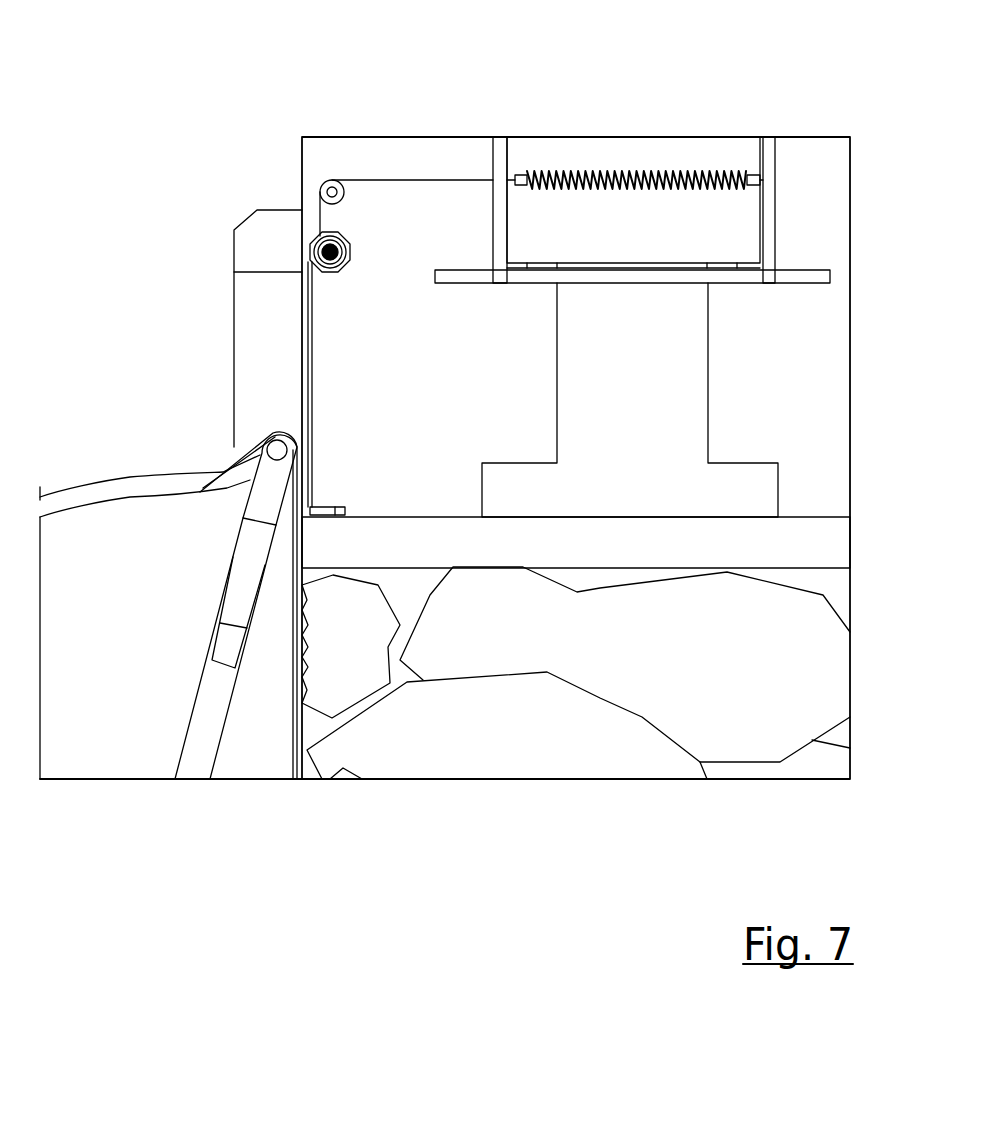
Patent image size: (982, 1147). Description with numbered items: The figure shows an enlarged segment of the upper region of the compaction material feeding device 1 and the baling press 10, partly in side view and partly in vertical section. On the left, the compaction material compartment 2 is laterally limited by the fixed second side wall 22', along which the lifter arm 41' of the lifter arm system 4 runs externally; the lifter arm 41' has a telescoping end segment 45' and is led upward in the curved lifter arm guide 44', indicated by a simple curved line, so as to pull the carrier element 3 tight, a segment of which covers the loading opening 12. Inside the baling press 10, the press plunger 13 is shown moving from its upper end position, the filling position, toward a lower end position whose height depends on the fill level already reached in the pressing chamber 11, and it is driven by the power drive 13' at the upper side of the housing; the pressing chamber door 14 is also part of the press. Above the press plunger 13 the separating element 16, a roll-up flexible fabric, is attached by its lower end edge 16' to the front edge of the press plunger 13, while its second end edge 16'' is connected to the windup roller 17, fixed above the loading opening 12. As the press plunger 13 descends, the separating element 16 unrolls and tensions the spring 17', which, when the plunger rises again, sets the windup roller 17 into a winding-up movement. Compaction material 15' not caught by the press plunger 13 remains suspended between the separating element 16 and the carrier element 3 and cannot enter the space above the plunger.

The compaction material feeding device 1 is at (120, 395).
The compaction material compartment 2 is at (150, 499).
The carrier element 3 is at (248, 438).
The lifter arm system 4 is at (203, 607).
The baling press 10 is at (808, 118).
The pressing chamber 11 is at (802, 762).
The loading opening 12 is at (288, 723).
The press plunger 13 is at (576, 588).
The power drive 13' is at (648, 400).
The pressing chamber door 14 is at (257, 298).
The compaction material 15' is at (576, 581).
The separating element 16 is at (400, 343).
The lower end edge 16' is at (346, 467).
The second end edge 16'' is at (347, 266).
The windup roller 17 is at (377, 242).
The spring 17' is at (632, 171).
The second side wall 22' is at (150, 464).
The lifter arm 41' is at (208, 648).
The lifter arm guide 44' is at (145, 535).
The telescoping end segment 45' is at (214, 593).